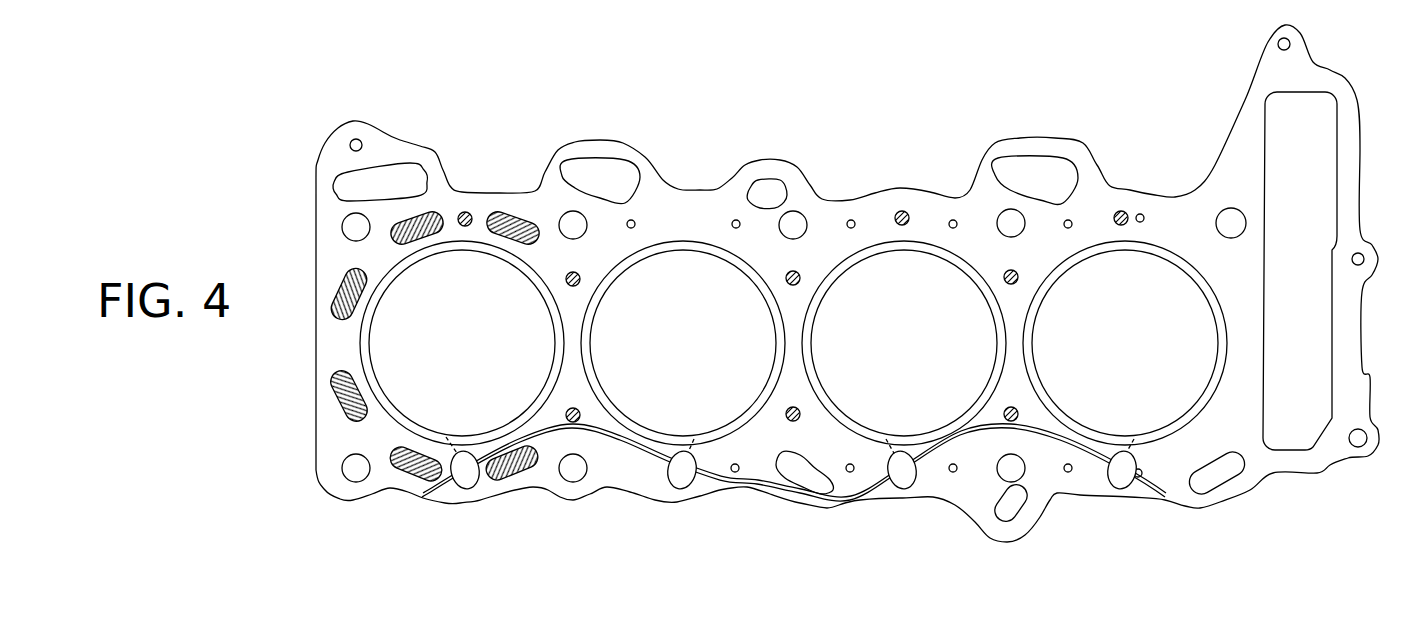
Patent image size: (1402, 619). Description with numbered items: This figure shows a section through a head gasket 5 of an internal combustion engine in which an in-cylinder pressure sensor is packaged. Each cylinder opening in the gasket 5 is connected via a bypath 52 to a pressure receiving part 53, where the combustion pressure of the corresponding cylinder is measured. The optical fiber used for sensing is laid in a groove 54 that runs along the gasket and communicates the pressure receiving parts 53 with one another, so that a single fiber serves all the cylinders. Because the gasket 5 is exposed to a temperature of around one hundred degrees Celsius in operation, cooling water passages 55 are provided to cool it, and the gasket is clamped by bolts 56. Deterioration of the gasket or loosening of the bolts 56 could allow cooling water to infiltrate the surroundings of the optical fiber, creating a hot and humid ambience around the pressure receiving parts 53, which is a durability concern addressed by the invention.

The gasket 5 is at (1245, 485).
The bypath 52 is at (1145, 453).
The pressure receiving part 53 is at (912, 487).
The groove 54 is at (787, 493).
The cooling water passage 55 is at (447, 217).
The bolt 56 is at (804, 214).